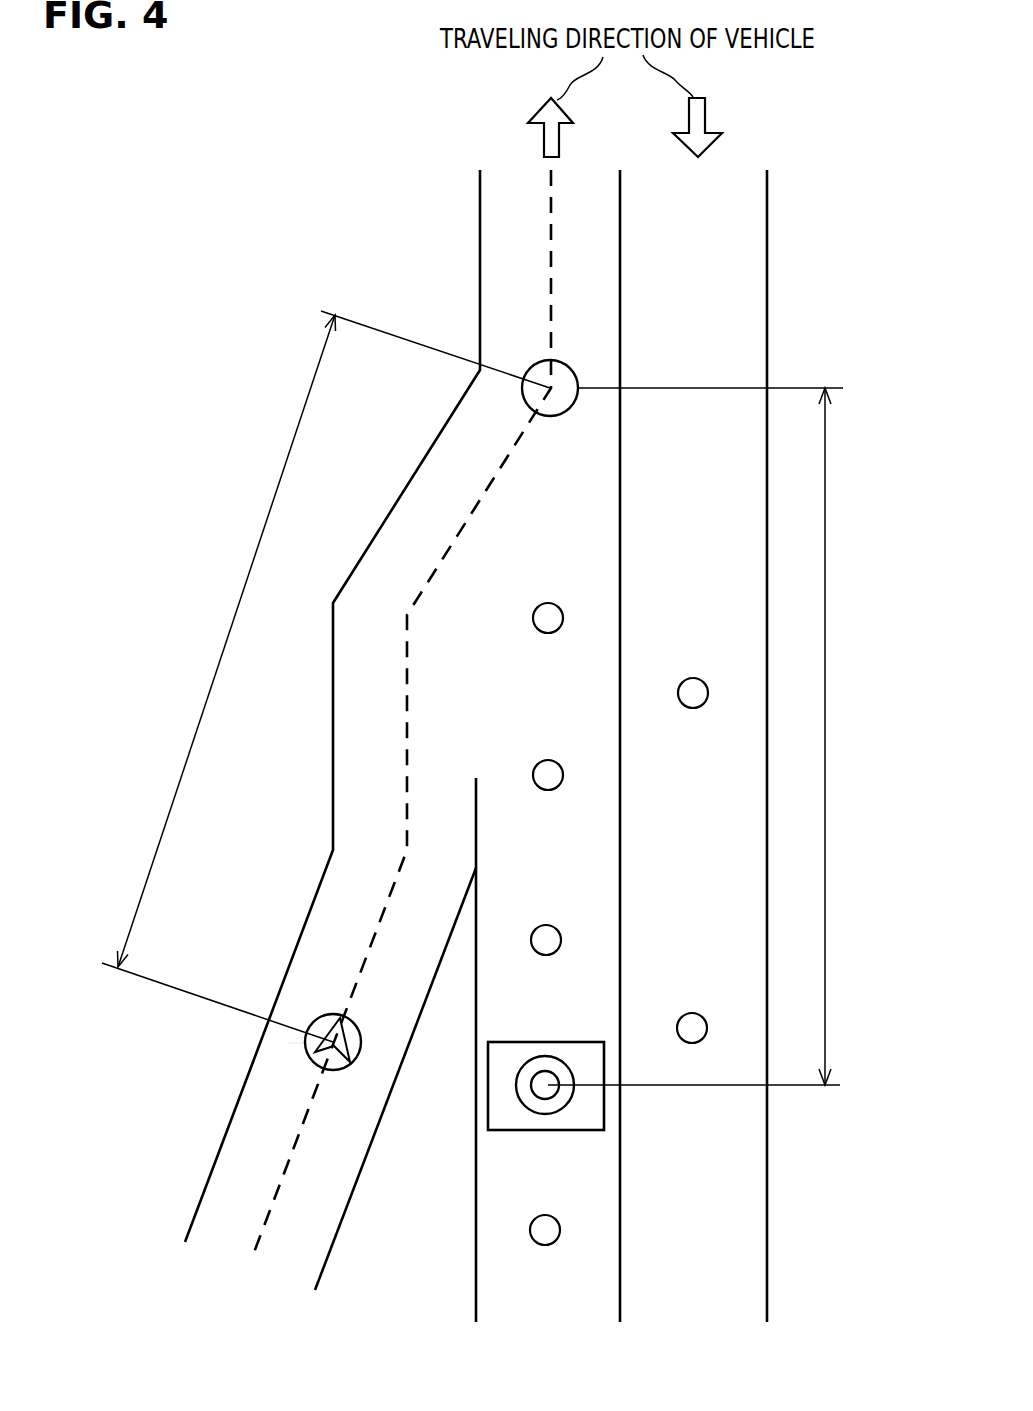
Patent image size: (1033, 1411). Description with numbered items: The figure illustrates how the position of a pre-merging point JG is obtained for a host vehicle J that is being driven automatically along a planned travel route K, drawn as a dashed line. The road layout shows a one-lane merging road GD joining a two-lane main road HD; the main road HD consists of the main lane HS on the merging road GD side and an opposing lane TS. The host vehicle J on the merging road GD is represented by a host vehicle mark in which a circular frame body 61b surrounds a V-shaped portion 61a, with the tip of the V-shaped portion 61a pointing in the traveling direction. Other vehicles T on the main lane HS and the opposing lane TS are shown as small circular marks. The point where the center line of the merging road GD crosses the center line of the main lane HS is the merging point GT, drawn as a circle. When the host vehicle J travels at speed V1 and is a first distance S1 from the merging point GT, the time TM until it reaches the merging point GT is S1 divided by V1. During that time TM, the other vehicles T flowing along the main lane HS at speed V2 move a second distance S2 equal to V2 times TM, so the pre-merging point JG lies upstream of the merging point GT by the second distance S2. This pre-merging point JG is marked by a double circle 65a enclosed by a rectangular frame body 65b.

The merging point GT is at (524, 397).
The planned travel route K is at (437, 572).
The first distance S1 is at (227, 641).
The second distance S2 is at (839, 736).
The time TM is at (472, 698).
The other vehicles T is at (548, 760).
The speed of the host vehicle V1 is at (332, 1024).
The V-shaped portion 61a is at (343, 1070).
The circular frame body 61b is at (354, 1023).
The host vehicle J is at (287, 1043).
The speed of the flow of the vehicles V2 is at (592, 1078).
The double circle 65a is at (536, 1057).
The rectangular frame body 65b is at (562, 1130).
The pre-merging point JG is at (592, 1110).
The merging road GD is at (238, 1178).
The opposing lane TS is at (743, 1257).
The main lane HS is at (530, 1277).
The main road HD is at (582, 1283).